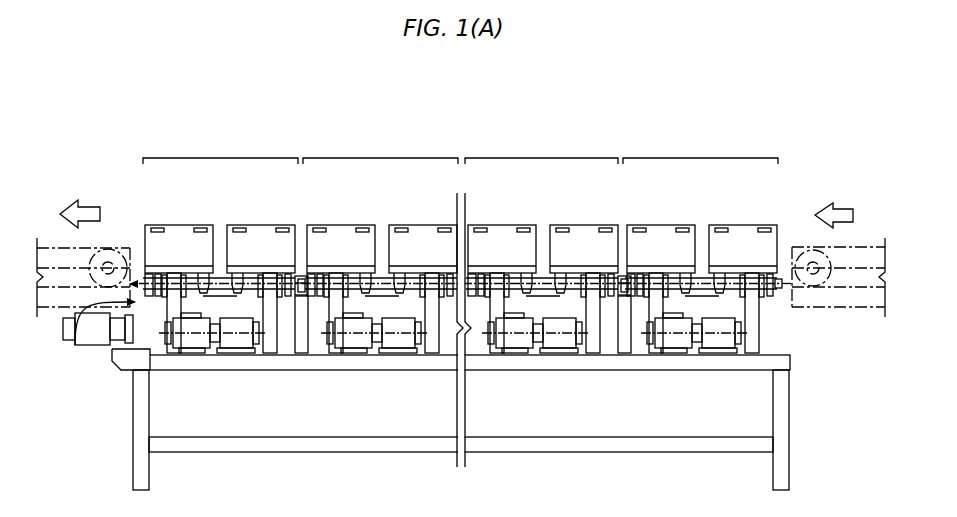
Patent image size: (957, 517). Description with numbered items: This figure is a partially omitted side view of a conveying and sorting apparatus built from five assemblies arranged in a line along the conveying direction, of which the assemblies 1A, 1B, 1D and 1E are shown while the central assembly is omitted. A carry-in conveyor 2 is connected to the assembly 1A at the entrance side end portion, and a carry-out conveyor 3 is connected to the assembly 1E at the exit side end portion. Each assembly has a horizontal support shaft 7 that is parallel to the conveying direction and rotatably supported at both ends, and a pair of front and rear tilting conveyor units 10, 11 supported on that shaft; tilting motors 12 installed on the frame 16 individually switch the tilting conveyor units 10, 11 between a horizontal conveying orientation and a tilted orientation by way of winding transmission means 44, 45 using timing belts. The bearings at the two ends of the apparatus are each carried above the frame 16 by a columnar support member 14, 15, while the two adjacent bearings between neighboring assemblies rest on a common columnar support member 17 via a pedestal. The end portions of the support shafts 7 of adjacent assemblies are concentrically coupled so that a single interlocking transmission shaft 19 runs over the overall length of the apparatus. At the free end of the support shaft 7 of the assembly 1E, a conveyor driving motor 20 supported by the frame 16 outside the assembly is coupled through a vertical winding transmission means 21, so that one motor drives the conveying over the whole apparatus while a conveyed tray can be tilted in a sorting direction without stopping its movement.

The assembly 1A is at (700, 148).
The assembly 1B is at (541, 148).
The assembly 1D is at (380, 148).
The assembly 1E is at (220, 148).
The carry-in conveyor 2 is at (866, 246).
The carry-out conveyor 3 is at (58, 247).
The support shaft 7 is at (222, 286).
The tilting conveyor unit 10 is at (263, 224).
The tilting conveyor unit 11 is at (183, 224).
The tilting motor 12 is at (228, 340).
The columnar support member 14 is at (773, 338).
The columnar support member 15 is at (157, 357).
The frame 16 is at (286, 360).
The common columnar support member 17 is at (302, 342).
The interlocking transmission shaft 19 is at (373, 300).
The conveyor driving motor 20 is at (96, 345).
The winding transmission means 21 is at (74, 336).
The winding transmission means 44 is at (263, 305).
The winding transmission means 45 is at (176, 273).